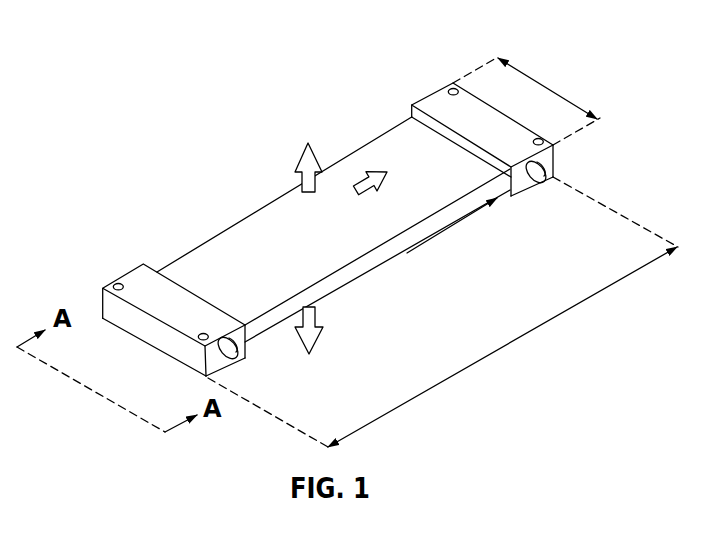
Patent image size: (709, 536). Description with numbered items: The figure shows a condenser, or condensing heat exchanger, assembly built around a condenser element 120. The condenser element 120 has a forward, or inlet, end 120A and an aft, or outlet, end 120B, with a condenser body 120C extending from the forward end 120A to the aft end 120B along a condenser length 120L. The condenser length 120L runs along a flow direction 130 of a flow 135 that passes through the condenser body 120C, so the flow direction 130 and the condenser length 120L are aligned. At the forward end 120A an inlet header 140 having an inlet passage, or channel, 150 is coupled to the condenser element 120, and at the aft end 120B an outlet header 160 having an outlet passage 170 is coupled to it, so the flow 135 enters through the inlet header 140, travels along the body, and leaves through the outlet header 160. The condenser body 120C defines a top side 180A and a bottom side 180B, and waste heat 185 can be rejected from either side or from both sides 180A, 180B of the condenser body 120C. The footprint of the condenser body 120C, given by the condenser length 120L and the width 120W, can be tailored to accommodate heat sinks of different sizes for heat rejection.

The condenser element 120 is at (385, 134).
The forward end 120A is at (276, 299).
The aft end 120B is at (443, 164).
The condenser body 120C is at (207, 265).
The width 120W is at (557, 93).
The condenser length 120L is at (536, 329).
The flow direction 130 is at (447, 230).
The flow 135 is at (382, 180).
The inlet header 140 is at (133, 283).
The inlet passage 150 is at (244, 351).
The outlet header 160 is at (557, 163).
The outlet passage 170 is at (537, 177).
The top side 180A is at (341, 242).
The bottom side 180B is at (369, 271).
The waste heat 185 is at (300, 166).